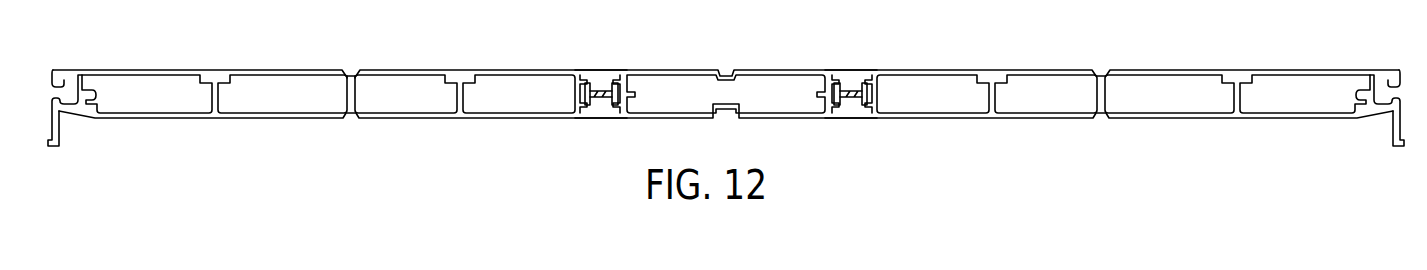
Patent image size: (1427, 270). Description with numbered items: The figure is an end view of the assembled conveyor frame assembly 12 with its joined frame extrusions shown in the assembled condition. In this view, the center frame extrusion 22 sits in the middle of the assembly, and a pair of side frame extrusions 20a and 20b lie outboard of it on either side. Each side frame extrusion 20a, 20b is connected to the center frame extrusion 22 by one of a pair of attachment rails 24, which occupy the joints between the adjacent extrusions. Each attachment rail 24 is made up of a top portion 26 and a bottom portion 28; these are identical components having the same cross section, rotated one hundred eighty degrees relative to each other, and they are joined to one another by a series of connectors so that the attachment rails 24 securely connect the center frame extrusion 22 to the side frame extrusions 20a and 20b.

The frame assembly 12 is at (763, 50).
The side frame extrusion 20a is at (262, 70).
The side frame extrusion 20b is at (1182, 70).
The center frame extrusion 22 is at (667, 70).
The attachment rail 24 is at (600, 56).
The top portion 26 is at (595, 78).
The bottom portion 28 is at (602, 110).